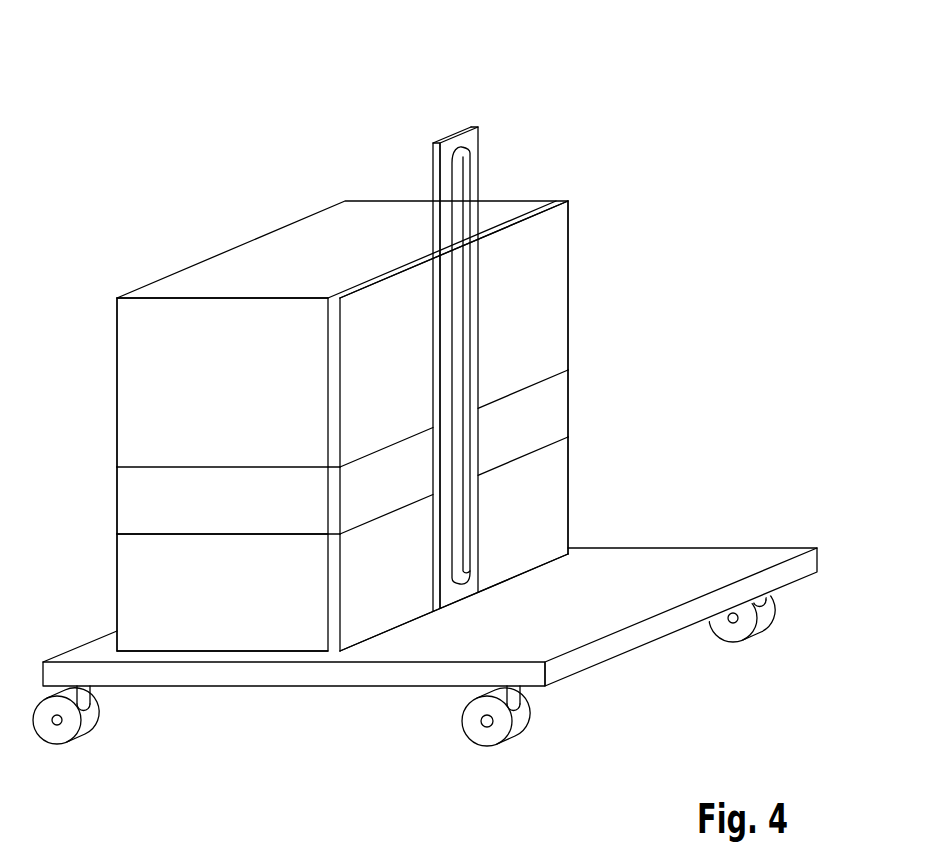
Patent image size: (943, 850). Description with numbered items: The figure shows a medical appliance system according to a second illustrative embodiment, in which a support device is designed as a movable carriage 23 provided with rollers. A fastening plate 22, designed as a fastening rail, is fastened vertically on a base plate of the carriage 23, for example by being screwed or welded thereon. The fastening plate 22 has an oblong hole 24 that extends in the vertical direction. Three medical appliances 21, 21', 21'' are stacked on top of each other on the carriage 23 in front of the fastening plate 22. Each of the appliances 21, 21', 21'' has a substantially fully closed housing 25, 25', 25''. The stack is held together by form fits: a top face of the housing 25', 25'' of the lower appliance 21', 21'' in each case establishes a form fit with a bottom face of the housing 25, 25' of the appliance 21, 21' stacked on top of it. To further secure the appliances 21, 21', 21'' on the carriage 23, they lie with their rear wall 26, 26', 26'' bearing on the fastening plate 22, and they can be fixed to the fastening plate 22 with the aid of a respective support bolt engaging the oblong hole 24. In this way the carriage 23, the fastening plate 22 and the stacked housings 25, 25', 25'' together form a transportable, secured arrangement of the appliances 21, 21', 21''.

The medical appliance 21 is at (300, 334).
The medical appliance 21' is at (300, 452).
The medical appliance 21'' is at (300, 544).
The housing 25 is at (186, 382).
The housing 25' is at (186, 503).
The housing 25'' is at (180, 592).
The rear wall 26 is at (487, 333).
The rear wall 26' is at (490, 450).
The rear wall 26'' is at (493, 544).
The fastening plate 22 is at (450, 106).
The oblong hole 24 is at (468, 171).
The carriage 23 is at (742, 497).